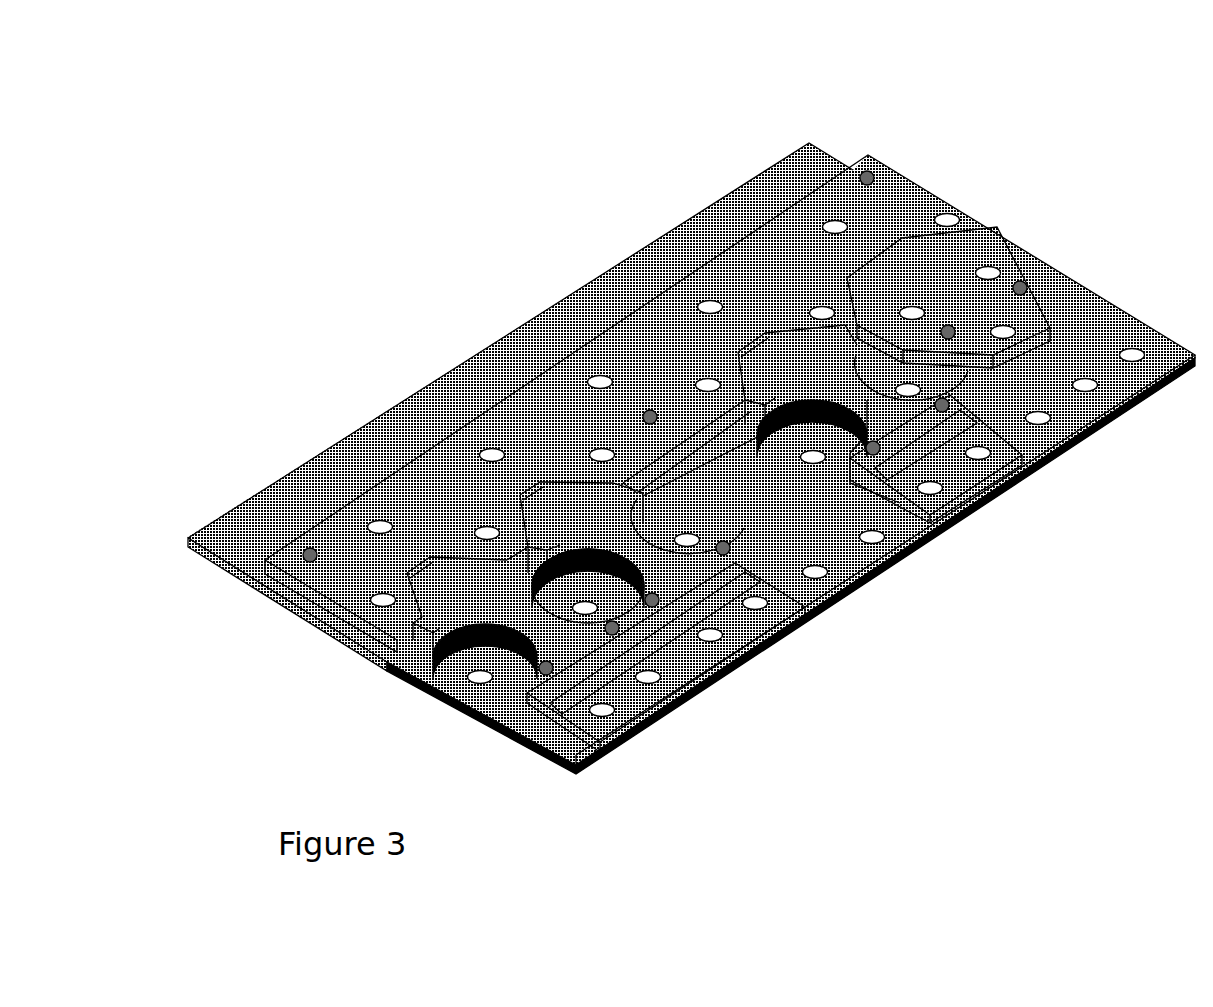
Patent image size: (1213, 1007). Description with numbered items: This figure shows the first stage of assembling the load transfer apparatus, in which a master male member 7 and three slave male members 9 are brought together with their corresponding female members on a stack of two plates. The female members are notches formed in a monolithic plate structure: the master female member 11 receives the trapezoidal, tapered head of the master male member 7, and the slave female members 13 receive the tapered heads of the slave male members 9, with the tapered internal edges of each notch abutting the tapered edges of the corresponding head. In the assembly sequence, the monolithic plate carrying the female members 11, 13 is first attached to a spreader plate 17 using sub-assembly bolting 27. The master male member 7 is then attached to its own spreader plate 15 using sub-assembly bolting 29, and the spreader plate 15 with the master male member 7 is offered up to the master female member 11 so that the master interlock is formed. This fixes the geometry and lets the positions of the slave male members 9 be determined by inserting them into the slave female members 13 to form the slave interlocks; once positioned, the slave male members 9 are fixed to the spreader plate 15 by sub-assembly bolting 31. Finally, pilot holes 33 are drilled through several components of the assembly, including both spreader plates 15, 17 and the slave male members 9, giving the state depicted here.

The master male member 7 is at (940, 297).
The slave male members 9 is at (824, 384).
The master female member 11 is at (933, 238).
The slave female members 13 is at (740, 352).
The spreader plate 15 is at (773, 508).
The spreader plate 17 is at (742, 197).
The sub-assembly bolting 27 is at (880, 163).
The sub-assembly bolting 29 is at (955, 323).
The sub-assembly bolting 31 is at (893, 462).
The pilot holes 33 is at (379, 588).